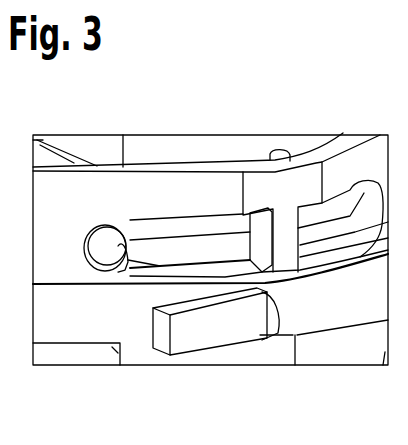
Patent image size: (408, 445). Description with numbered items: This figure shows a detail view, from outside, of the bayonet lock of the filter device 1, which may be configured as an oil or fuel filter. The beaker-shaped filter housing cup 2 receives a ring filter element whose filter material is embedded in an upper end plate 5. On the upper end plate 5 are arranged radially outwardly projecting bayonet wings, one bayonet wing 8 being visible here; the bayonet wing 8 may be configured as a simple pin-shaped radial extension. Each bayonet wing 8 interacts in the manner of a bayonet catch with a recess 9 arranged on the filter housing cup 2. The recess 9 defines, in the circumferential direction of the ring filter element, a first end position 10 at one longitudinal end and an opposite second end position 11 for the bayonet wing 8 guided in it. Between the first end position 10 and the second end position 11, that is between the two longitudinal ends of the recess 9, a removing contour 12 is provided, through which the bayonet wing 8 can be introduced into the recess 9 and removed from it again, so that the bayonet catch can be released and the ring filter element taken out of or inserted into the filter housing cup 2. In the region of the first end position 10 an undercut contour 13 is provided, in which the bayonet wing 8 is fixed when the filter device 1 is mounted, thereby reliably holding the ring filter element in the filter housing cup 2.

The filter device 1 is at (282, 126).
The filter housing cup 2 is at (346, 300).
The upper end plate 5 is at (253, 150).
The bayonet wing 8 is at (108, 252).
The recess 9 is at (187, 252).
The first end position 10 is at (95, 222).
The second end position 11 is at (362, 205).
The removing contour 12 is at (284, 150).
The undercut contour 13 is at (123, 258).